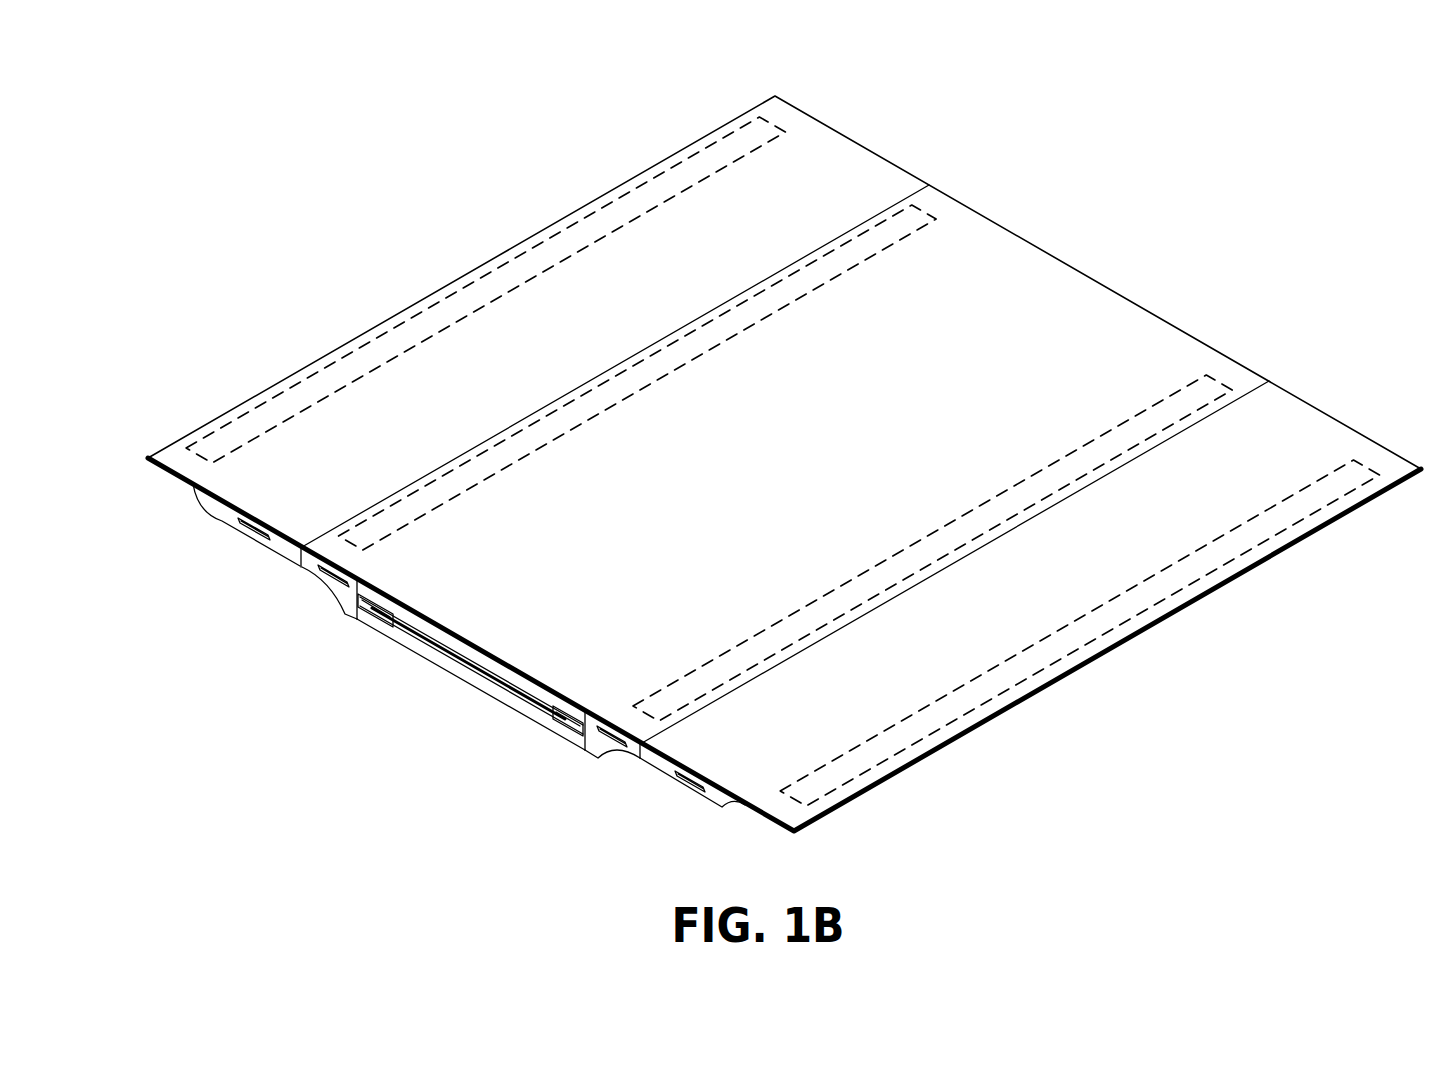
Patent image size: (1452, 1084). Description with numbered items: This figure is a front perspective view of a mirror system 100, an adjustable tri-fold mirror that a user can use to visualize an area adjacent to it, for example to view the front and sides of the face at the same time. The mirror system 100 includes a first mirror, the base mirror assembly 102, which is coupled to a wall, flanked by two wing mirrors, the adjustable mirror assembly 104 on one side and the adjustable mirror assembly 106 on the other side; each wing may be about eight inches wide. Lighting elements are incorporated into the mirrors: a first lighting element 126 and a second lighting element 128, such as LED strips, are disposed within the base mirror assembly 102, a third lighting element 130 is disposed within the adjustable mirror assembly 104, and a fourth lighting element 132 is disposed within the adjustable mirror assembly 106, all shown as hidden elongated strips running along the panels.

The mirror system 100 is at (232, 115).
The base mirror assembly 102 is at (1112, 260).
The adjustable mirror assembly 104 is at (455, 252).
The adjustable mirror assembly 106 is at (1360, 410).
The first lighting element 126 is at (918, 207).
The second lighting element 128 is at (1208, 378).
The third lighting element 130 is at (208, 437).
The fourth lighting element 132 is at (905, 748).